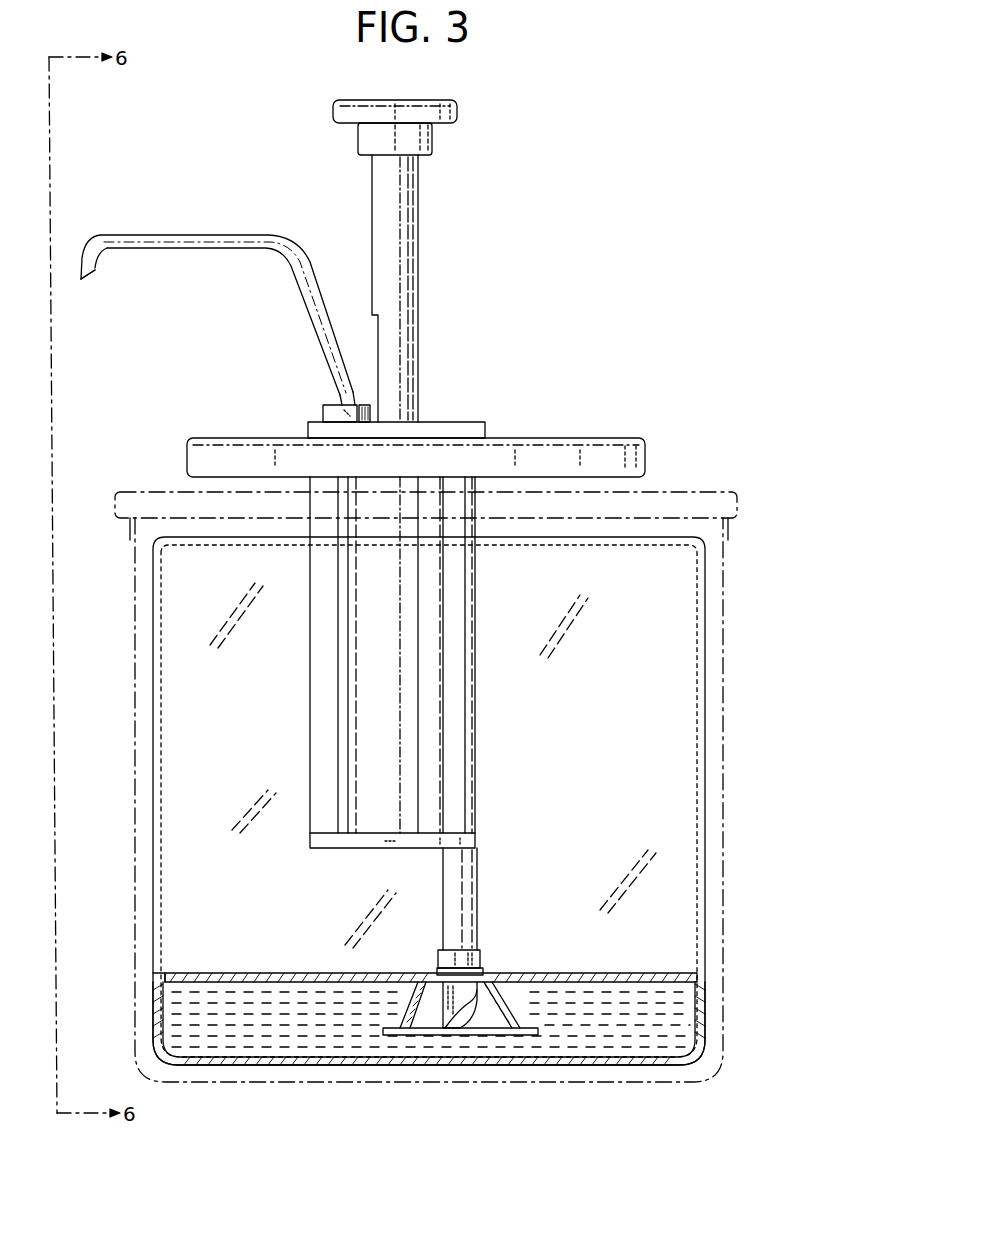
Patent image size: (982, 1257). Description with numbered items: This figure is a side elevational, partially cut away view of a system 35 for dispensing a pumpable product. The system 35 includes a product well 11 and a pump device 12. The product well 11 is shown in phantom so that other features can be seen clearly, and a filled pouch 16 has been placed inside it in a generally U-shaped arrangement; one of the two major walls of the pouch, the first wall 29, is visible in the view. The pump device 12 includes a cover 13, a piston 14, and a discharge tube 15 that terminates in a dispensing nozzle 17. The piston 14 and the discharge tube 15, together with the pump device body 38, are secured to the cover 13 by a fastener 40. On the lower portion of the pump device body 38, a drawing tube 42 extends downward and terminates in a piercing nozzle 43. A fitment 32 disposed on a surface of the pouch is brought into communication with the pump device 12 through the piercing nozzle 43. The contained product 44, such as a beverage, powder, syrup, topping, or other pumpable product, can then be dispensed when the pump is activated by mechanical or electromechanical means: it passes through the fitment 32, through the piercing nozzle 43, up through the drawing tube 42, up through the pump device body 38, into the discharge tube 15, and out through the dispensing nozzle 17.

The product well 11 is at (723, 660).
The pump device 12 is at (512, 264).
The cover 13 is at (598, 438).
The piston 14 is at (372, 195).
The discharge tube 15 is at (194, 250).
The filled pouch 16 is at (705, 742).
The dispensing nozzle 17 is at (102, 272).
The first wall 29 is at (243, 747).
The fitment 32 is at (482, 1035).
The system 35 is at (634, 177).
The pump device body 38 is at (310, 690).
The fastener 40 is at (323, 412).
The drawing tube 42 is at (477, 880).
The piercing nozzle 43 is at (485, 965).
The contained product 44 is at (282, 1030).